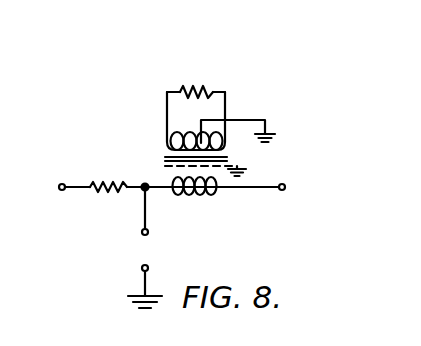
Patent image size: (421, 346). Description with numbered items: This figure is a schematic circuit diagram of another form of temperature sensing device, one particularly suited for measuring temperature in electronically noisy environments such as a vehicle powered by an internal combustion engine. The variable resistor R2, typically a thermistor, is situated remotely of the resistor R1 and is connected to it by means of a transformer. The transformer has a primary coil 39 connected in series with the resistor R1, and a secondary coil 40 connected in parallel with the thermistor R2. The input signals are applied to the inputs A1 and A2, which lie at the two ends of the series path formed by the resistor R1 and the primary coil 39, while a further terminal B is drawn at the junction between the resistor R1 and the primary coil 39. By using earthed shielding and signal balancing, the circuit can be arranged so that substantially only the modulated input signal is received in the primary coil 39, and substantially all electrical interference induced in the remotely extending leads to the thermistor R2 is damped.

The primary coil 39 is at (197, 195).
The secondary coil 40 is at (168, 136).
The resistor R1 is at (108, 172).
The variable resistor R2 is at (196, 78).
The input A1 is at (50, 187).
The input A2 is at (294, 190).
The terminal B is at (156, 226).